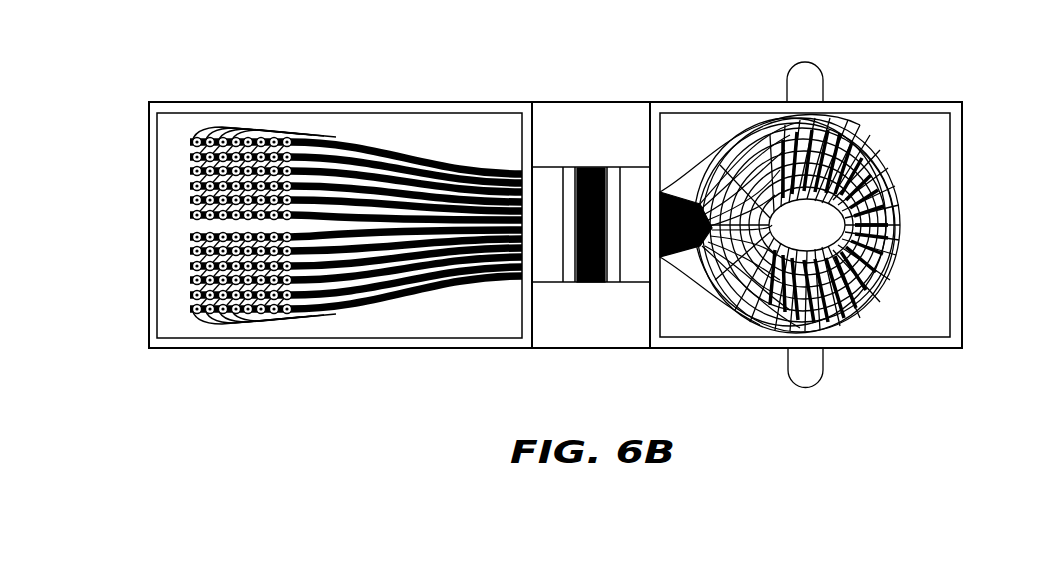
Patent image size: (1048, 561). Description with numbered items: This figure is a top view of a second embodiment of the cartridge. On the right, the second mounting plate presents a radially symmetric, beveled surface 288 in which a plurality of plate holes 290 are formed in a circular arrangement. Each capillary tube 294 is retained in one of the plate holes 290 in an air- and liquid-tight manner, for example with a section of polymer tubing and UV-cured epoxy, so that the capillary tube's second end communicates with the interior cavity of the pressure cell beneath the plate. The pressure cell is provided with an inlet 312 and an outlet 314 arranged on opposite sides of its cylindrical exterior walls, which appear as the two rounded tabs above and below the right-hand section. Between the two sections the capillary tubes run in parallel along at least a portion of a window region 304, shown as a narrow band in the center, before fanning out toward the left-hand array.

The window region 304 is at (590, 166).
The outlet 314 is at (786, 90).
The inlet 312 is at (824, 362).
The plate holes 290 is at (895, 218).
The capillary tube 294 is at (830, 128).
The beveled surface 288 is at (888, 226).